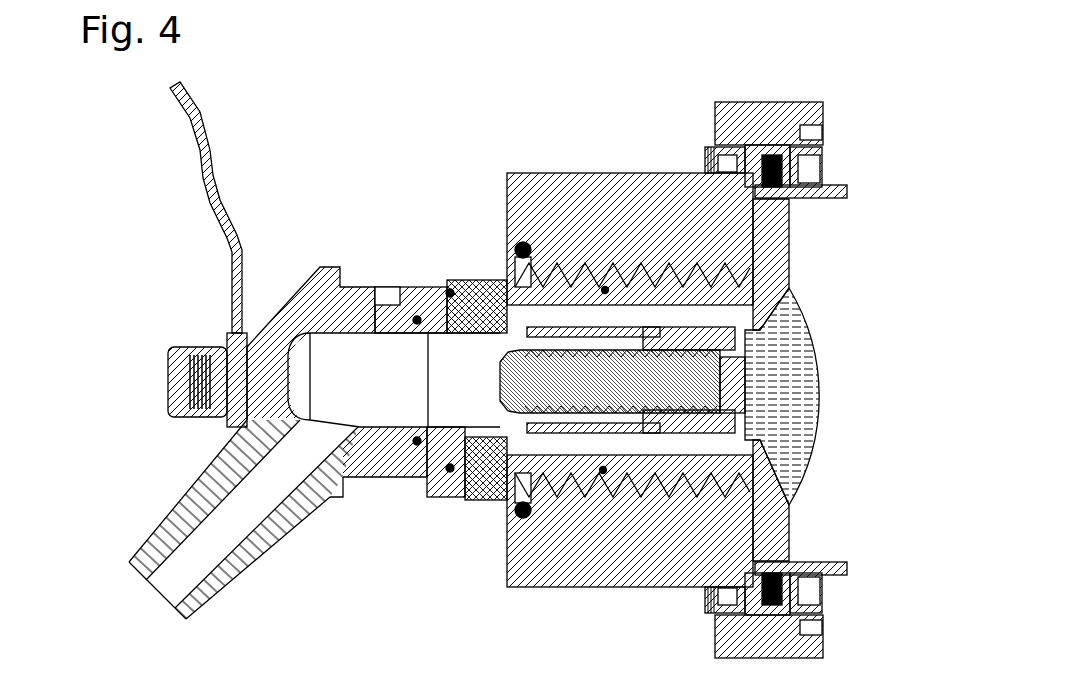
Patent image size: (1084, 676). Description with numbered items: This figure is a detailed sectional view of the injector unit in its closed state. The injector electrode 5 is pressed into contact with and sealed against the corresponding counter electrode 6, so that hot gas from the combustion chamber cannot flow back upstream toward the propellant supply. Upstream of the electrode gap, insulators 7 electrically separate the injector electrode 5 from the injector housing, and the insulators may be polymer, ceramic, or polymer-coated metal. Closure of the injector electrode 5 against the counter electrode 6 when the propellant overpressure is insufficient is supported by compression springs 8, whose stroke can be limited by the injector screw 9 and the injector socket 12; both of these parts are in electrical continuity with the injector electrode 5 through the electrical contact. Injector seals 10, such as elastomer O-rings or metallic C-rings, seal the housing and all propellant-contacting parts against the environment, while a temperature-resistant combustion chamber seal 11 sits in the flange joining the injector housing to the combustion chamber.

The injector electrode 5 is at (775, 378).
The counter electrode 6 is at (775, 497).
The insulator 7 is at (503, 283).
The compression spring 8 is at (593, 422).
The injector screw 9 is at (557, 378).
The injector seal 10 is at (603, 470).
The combustion chamber seal 11 is at (770, 163).
The injector socket 12 is at (640, 332).